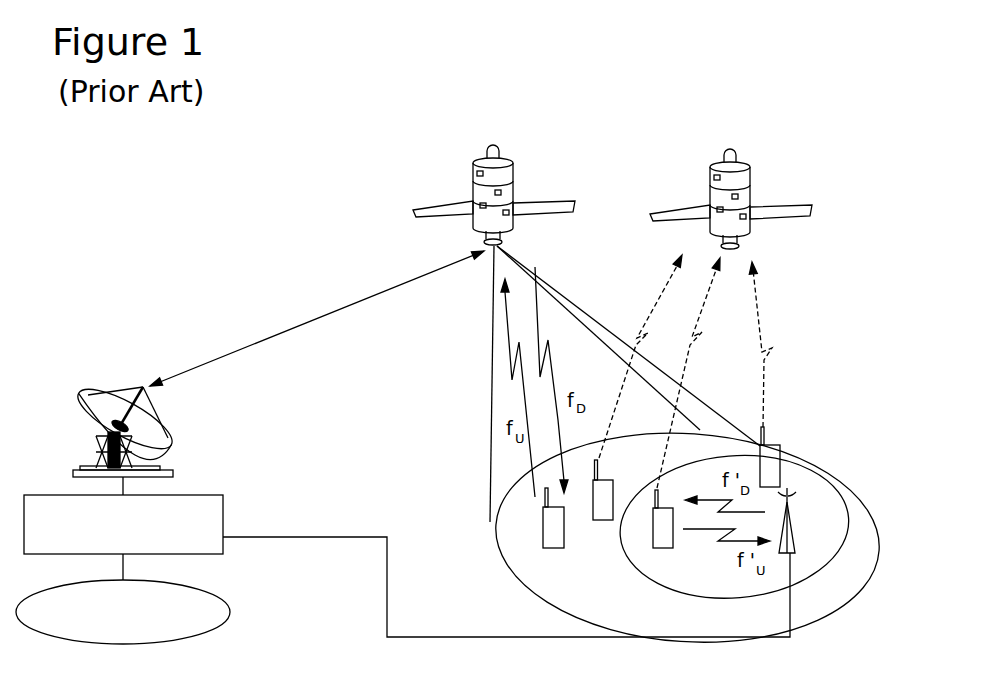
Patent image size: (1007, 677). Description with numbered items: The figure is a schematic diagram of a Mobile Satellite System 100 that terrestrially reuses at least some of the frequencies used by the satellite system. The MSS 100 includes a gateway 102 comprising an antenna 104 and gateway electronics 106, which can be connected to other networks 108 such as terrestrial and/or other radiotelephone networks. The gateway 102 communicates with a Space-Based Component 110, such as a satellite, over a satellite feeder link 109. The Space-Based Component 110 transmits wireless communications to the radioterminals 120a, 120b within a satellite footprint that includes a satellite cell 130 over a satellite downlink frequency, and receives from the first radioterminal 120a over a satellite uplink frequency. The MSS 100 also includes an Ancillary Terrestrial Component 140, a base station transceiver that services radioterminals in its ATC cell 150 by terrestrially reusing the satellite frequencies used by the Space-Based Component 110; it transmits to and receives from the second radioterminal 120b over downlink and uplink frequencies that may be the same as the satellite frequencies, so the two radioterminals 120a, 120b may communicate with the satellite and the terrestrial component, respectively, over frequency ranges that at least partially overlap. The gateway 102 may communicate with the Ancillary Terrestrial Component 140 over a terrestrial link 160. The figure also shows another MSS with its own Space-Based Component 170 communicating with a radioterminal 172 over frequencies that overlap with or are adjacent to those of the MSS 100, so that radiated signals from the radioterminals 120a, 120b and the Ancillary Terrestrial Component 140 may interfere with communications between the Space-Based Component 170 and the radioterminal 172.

The Mobile Satellite System 100 is at (386, 155).
The gateway 102 is at (290, 424).
The antenna 104 is at (175, 470).
The gateway electronics 106 is at (223, 523).
The other networks 108 is at (230, 610).
The satellite feeder link 109 is at (377, 292).
The Space-Based Component 110 is at (515, 183).
The first radioterminal 120a is at (600, 472).
The second radioterminal 120b is at (664, 549).
The satellite cell 130 is at (833, 474).
The Ancillary Terrestrial Component 140 is at (793, 522).
The ATC cell 150 is at (680, 590).
The terrestrial link 160 is at (447, 634).
The Space-Based Component of another MSS 170 is at (751, 187).
The radioterminal 172 is at (781, 446).